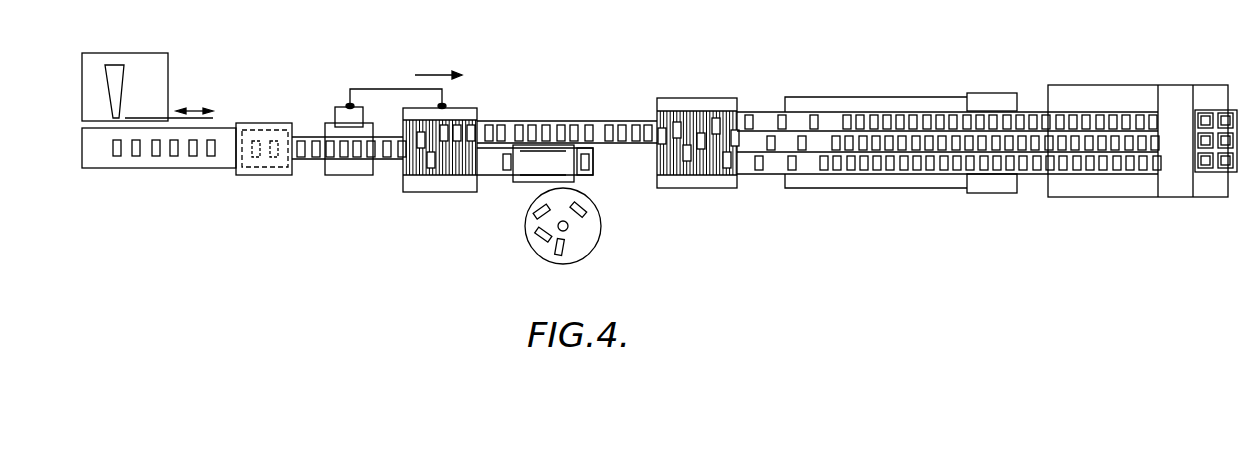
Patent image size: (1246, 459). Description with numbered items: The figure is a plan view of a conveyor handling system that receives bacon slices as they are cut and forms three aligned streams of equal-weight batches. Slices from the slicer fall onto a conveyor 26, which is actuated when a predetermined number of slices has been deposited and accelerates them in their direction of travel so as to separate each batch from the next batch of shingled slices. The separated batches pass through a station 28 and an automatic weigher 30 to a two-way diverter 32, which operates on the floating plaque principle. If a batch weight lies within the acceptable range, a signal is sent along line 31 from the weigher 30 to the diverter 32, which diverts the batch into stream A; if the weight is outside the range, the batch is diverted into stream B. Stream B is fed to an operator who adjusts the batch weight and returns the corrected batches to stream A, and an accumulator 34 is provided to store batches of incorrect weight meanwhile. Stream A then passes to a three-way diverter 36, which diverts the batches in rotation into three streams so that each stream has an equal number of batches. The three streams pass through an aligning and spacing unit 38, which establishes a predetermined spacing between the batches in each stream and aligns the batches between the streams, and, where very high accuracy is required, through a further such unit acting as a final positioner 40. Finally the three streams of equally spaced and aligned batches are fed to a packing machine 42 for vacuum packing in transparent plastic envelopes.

The conveyor 26 is at (130, 172).
The transfer station 28 is at (252, 122).
The automatic weigher 30 is at (342, 176).
The line 31 is at (383, 89).
The two-way diverter 32 is at (470, 108).
The stream A is at (522, 121).
The stream B is at (493, 177).
The accumulator 34 is at (602, 227).
The three-way diverter 36 is at (712, 98).
The aligning and spacing unit 38 is at (865, 190).
The final positioner 40 is at (1000, 93).
The packing machine 42 is at (1092, 197).